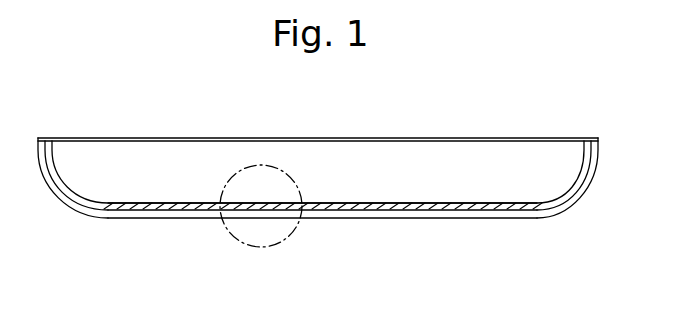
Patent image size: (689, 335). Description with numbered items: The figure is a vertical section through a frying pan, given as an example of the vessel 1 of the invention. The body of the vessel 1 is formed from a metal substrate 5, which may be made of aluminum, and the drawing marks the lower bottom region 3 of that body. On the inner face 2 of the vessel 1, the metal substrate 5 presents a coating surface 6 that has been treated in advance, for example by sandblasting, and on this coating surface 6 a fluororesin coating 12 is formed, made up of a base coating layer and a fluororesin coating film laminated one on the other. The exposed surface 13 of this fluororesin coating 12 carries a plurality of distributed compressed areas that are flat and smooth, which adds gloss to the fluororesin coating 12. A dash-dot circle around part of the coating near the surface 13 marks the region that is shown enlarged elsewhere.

The vessel 1 is at (576, 232).
The inner face 2 is at (349, 186).
The bottom of container 3 is at (373, 232).
The metal substrate 5 is at (452, 212).
The coating surface 6 is at (468, 203).
The fluororesin coating 12 is at (177, 202).
The surface 13 is at (257, 189).